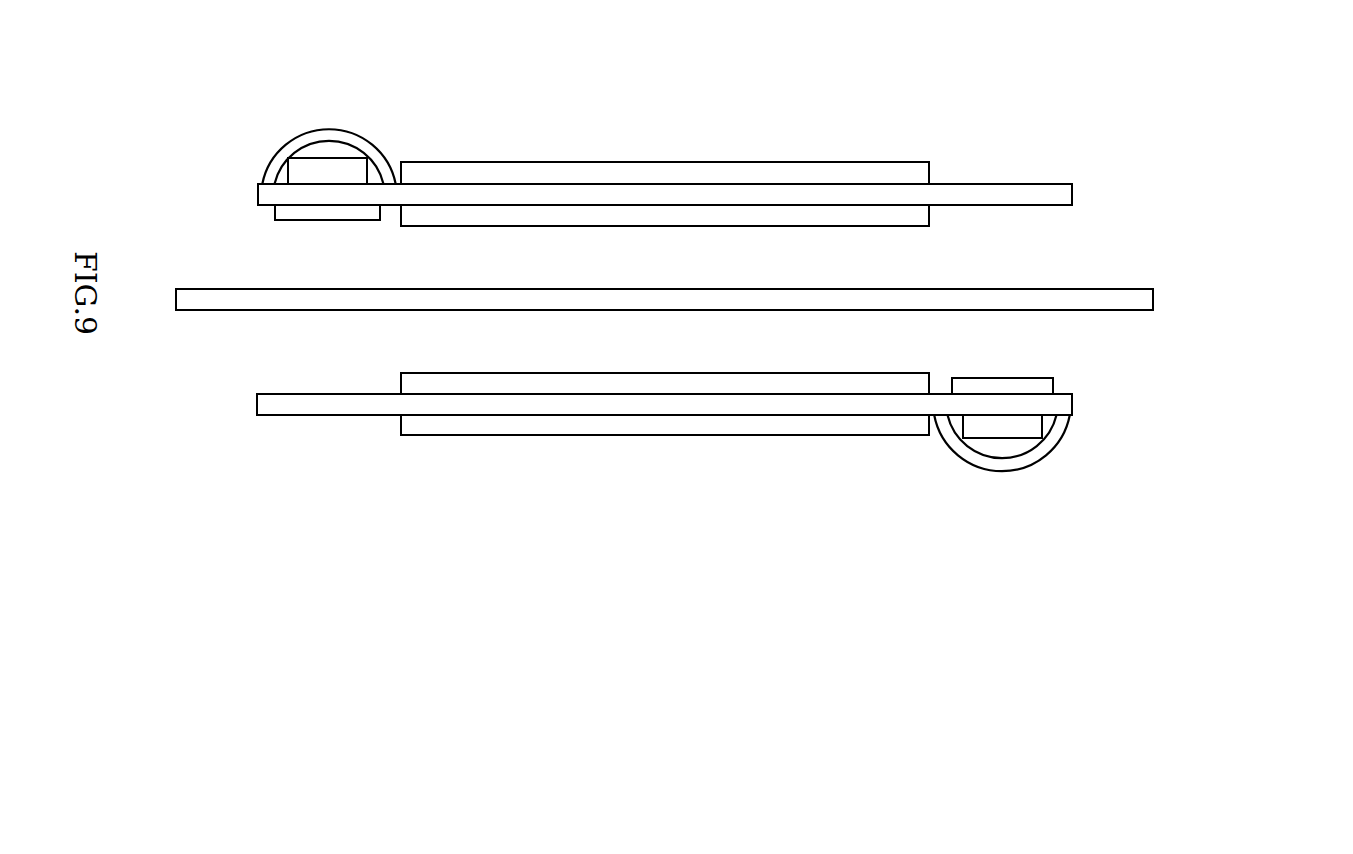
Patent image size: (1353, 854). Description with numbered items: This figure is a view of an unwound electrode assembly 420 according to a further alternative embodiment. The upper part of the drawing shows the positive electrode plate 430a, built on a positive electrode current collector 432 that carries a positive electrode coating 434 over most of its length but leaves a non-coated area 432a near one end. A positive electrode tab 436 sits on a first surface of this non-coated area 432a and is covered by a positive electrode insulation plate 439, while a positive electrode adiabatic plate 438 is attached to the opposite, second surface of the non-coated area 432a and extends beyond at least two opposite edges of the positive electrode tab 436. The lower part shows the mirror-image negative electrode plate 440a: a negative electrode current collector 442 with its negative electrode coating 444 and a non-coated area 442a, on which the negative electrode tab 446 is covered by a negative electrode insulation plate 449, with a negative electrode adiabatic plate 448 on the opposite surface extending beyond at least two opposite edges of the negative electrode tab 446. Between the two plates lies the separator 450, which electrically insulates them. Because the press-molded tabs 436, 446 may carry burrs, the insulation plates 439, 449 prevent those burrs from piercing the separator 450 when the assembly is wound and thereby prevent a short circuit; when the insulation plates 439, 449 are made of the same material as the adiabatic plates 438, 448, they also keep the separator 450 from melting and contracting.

The electrode assembly 420 is at (1232, 133).
The upper electrode assembly 430a is at (1012, 153).
The positive electrode current collector 432 is at (1073, 195).
The non-coated area 432a is at (948, 183).
The upper electrode layer 434 is at (517, 170).
The positive electrode tab 436 is at (331, 162).
The positive electrode adiabatic plate 438 is at (287, 211).
The positive electrode insulation plate 439 is at (278, 155).
The separator 450 is at (1082, 295).
The lower electrode assembly 440a is at (1085, 462).
The negative electrode current collector 442 is at (1073, 404).
The non-coated area 442a is at (832, 408).
The lower electrode layer 444 is at (722, 433).
The negative electrode tab 446 is at (1015, 433).
The negative electrode adiabatic plate 448 is at (1045, 378).
The negative electrode insulation plate 449 is at (952, 450).